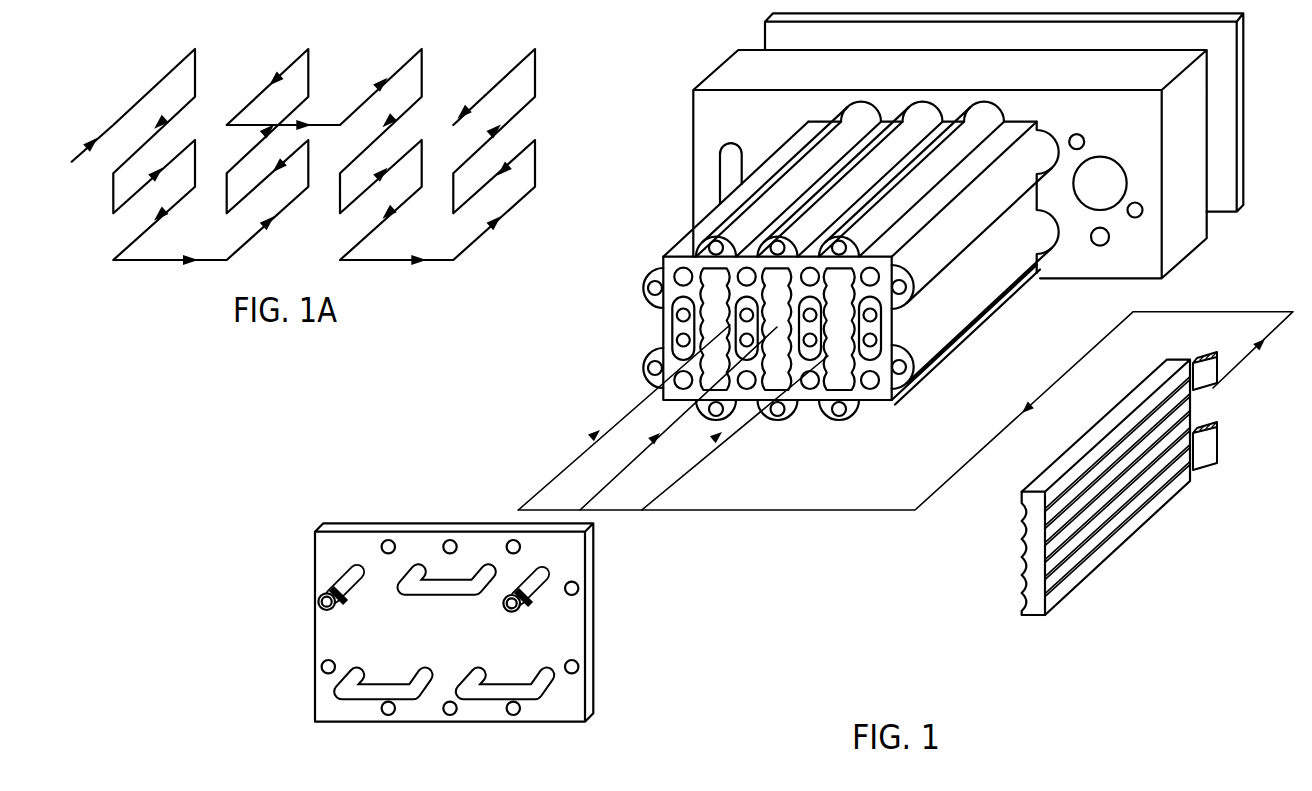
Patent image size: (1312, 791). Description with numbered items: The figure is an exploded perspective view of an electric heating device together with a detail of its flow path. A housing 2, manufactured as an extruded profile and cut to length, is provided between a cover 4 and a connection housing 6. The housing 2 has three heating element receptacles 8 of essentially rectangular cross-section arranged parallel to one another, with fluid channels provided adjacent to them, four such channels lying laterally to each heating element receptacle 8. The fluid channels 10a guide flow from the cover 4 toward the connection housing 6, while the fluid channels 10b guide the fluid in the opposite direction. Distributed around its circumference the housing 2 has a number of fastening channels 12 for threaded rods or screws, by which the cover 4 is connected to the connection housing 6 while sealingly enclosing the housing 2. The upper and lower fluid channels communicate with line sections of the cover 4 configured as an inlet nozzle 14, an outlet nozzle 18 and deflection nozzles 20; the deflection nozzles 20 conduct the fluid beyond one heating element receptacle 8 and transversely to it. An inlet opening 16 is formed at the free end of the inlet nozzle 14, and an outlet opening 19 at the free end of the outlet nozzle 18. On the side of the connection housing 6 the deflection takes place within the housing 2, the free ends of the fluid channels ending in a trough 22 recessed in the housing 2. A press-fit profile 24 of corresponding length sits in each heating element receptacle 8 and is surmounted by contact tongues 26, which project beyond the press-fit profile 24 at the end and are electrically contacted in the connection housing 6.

The housing 2 is at (654, 234).
The cover 4 is at (305, 517).
The connection housing 6 is at (697, 67).
The heating element receptacle 8 is at (750, 260).
The fluid channels 10a is at (669, 337).
The fluid channels 10b is at (670, 278).
The fastening channels 12 is at (716, 240).
The inlet nozzle 14 is at (306, 605).
The inlet opening 16 is at (326, 605).
The outlet nozzle 18 is at (537, 587).
The outlet opening 19 is at (517, 612).
The deflection nozzles 20 is at (443, 596).
The trough 22 is at (870, 405).
The press-fit profile 24 is at (1113, 568).
The contact tongues 26 is at (1213, 434).